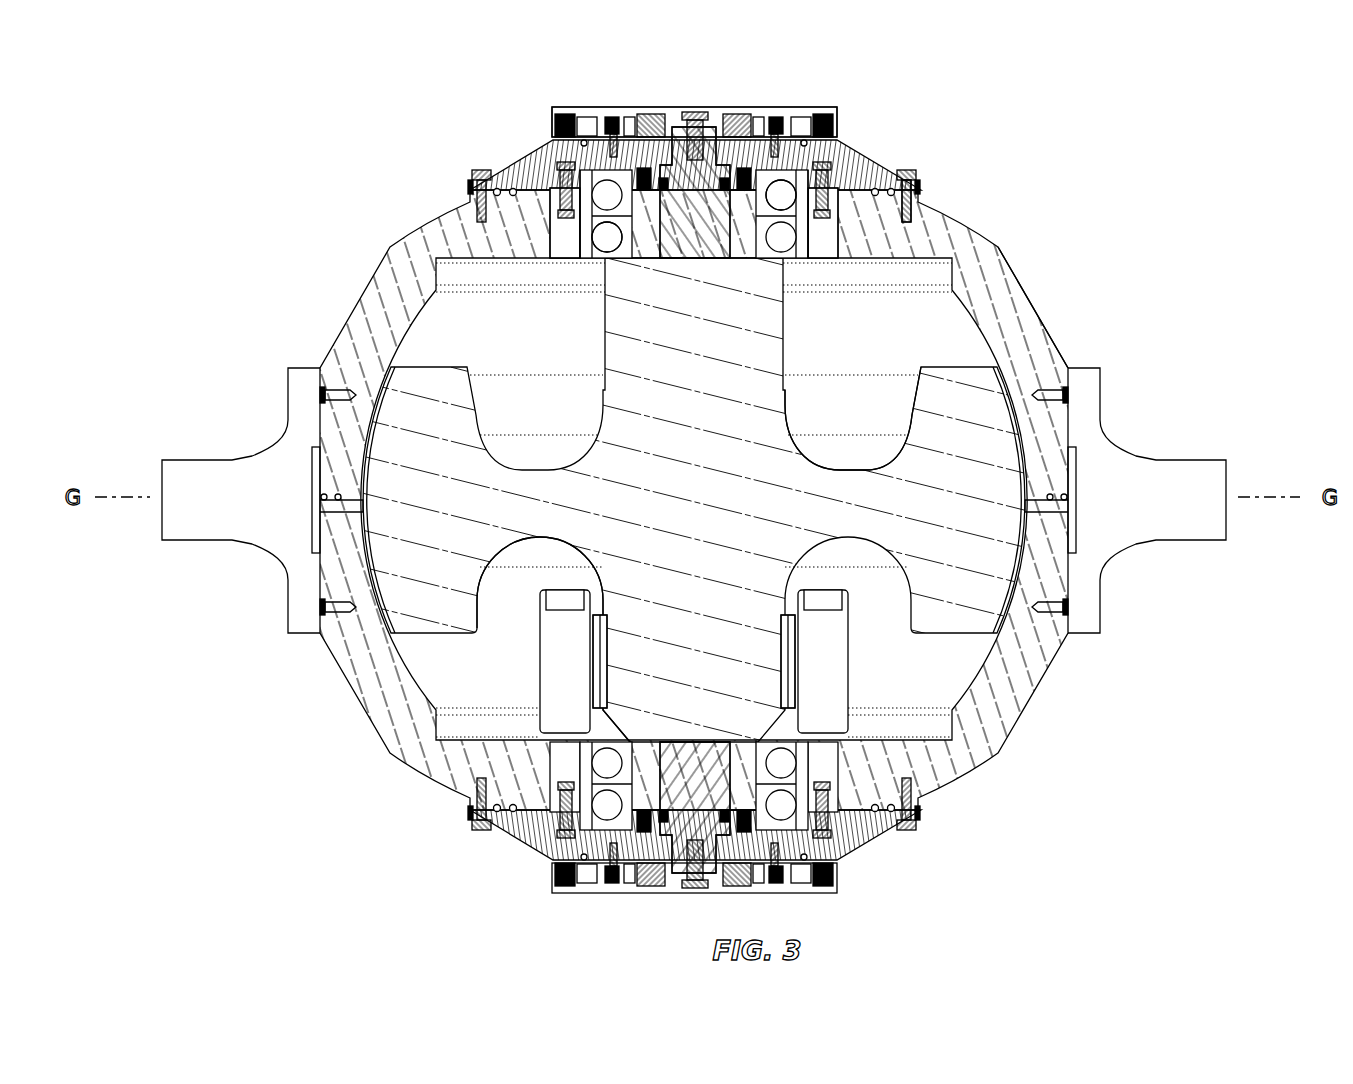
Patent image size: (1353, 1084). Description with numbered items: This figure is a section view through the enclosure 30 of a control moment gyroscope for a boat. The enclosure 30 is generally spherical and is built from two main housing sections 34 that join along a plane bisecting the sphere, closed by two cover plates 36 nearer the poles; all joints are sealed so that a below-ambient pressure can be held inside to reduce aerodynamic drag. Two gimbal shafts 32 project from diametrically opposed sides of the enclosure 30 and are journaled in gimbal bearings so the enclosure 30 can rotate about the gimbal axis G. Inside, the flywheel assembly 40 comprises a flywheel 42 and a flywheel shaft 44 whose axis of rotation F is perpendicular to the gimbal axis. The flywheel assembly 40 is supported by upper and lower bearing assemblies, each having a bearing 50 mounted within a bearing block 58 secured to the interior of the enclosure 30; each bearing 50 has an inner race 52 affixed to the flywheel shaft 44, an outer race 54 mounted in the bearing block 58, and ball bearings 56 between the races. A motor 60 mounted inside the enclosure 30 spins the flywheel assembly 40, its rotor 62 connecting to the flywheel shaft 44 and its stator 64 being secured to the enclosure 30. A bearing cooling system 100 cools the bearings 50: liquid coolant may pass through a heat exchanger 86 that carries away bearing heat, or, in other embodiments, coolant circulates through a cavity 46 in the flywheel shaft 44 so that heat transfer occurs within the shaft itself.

The enclosure 30 is at (1102, 262).
The gimbal shafts 32 is at (242, 475).
The main housing sections 34 is at (985, 272).
The cover plates 36 is at (510, 178).
The flywheel assembly 40 is at (798, 426).
The flywheel 42 is at (946, 566).
The flywheel shaft 44 is at (670, 640).
The cavity 46 is at (698, 265).
The bearings 50 is at (590, 278).
The inner race 52 is at (836, 125).
The outer race 54 is at (800, 218).
The ball bearings 56 is at (778, 198).
The bearing block 58 is at (915, 206).
The motor 60 is at (528, 656).
The rotor 62 is at (607, 646).
The stator 64 is at (566, 605).
The heat exchanger 86 is at (752, 89).
The bearing cooling system 100 is at (603, 84).